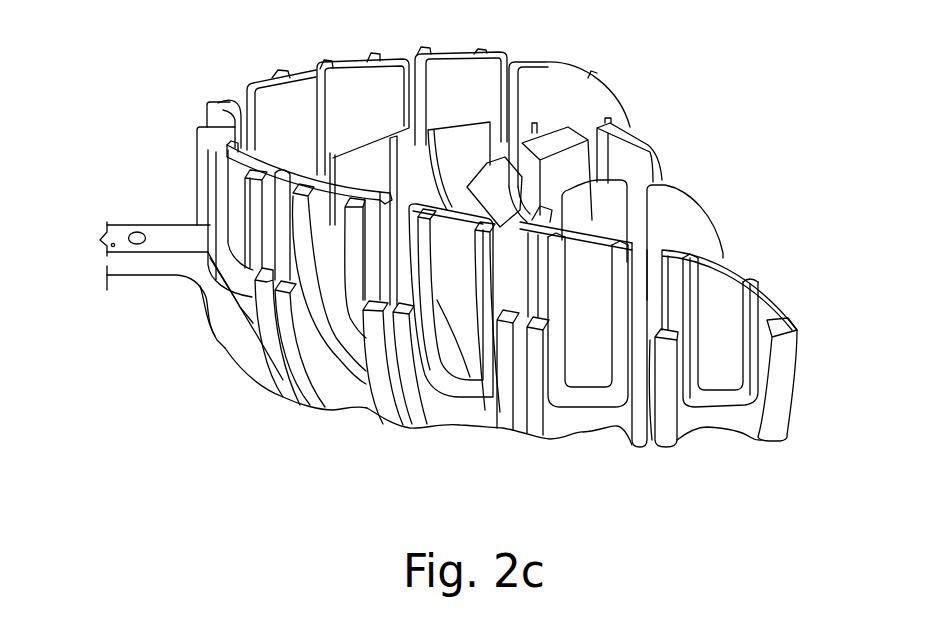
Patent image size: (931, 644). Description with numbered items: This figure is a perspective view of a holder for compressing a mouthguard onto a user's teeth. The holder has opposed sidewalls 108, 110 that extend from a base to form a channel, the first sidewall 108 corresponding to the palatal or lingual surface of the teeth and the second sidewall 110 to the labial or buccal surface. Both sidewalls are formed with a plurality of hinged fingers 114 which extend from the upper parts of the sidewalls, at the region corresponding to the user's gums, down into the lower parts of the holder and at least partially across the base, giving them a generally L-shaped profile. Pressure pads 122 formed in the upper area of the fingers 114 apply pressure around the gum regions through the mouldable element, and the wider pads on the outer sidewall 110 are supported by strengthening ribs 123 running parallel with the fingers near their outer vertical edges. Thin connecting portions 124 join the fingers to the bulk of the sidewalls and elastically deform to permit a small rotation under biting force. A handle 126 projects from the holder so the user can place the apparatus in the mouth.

The first sidewall 108 is at (489, 76).
The second sidewall 110 is at (232, 200).
The hinged fingers 114 is at (330, 318).
The pressure pads 122 is at (368, 83).
The strengthening ribs 123 is at (447, 388).
The connecting portions 124 is at (512, 340).
The handle 126 is at (143, 227).